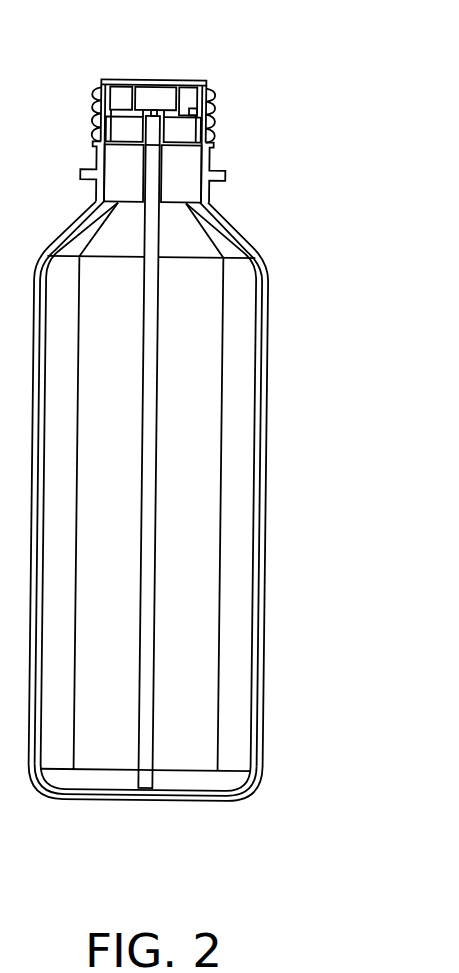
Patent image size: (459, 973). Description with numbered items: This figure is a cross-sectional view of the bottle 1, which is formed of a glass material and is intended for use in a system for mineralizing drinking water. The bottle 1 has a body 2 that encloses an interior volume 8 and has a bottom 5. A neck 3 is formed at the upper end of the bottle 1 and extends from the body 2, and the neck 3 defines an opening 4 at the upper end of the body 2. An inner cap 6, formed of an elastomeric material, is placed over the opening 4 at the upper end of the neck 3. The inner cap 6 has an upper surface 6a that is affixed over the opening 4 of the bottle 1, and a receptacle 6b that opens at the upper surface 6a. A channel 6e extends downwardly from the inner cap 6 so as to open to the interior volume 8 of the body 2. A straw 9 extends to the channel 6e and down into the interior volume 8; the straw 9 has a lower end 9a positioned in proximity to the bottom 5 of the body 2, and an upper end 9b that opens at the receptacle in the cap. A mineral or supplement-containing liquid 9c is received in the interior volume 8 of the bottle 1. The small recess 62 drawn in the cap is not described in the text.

The bottle 1 is at (340, 388).
The body 2 is at (263, 483).
The neck 3 is at (212, 166).
The opening 4 is at (203, 88).
The bottom 5 is at (222, 797).
The inner cap 6 is at (120, 80).
The upper surface 6a is at (192, 81).
The receptacle 6b is at (161, 92).
The channel 6e is at (152, 110).
The recess in cap 62 is at (192, 113).
The interior volume 8 is at (244, 352).
The straw 9 is at (145, 140).
The end 9a is at (142, 792).
The upper end 9b is at (152, 117).
The mineral or supplement-containing liquid 9c is at (248, 300).